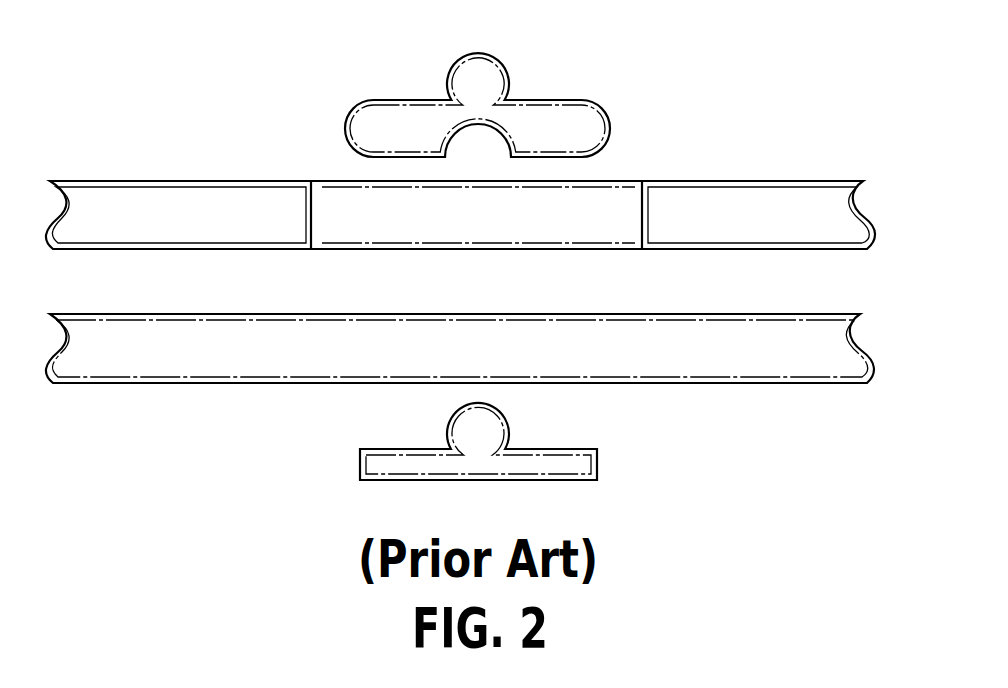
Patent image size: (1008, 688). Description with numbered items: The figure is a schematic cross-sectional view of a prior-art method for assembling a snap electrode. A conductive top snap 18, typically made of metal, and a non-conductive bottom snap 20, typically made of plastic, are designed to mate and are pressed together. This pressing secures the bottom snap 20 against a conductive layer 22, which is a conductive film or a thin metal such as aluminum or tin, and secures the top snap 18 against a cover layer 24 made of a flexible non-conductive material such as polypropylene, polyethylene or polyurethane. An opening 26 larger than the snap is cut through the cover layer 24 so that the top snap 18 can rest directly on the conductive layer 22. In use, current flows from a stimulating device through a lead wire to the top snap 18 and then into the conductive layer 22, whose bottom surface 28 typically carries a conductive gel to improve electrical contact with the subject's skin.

The conductive top snap 18 is at (582, 120).
The non-conductive bottom snap 20 is at (573, 462).
The conductive layer 22 is at (485, 352).
The cover layer 24 is at (817, 195).
The opening 26 is at (395, 222).
The bottom surface 28 is at (117, 385).